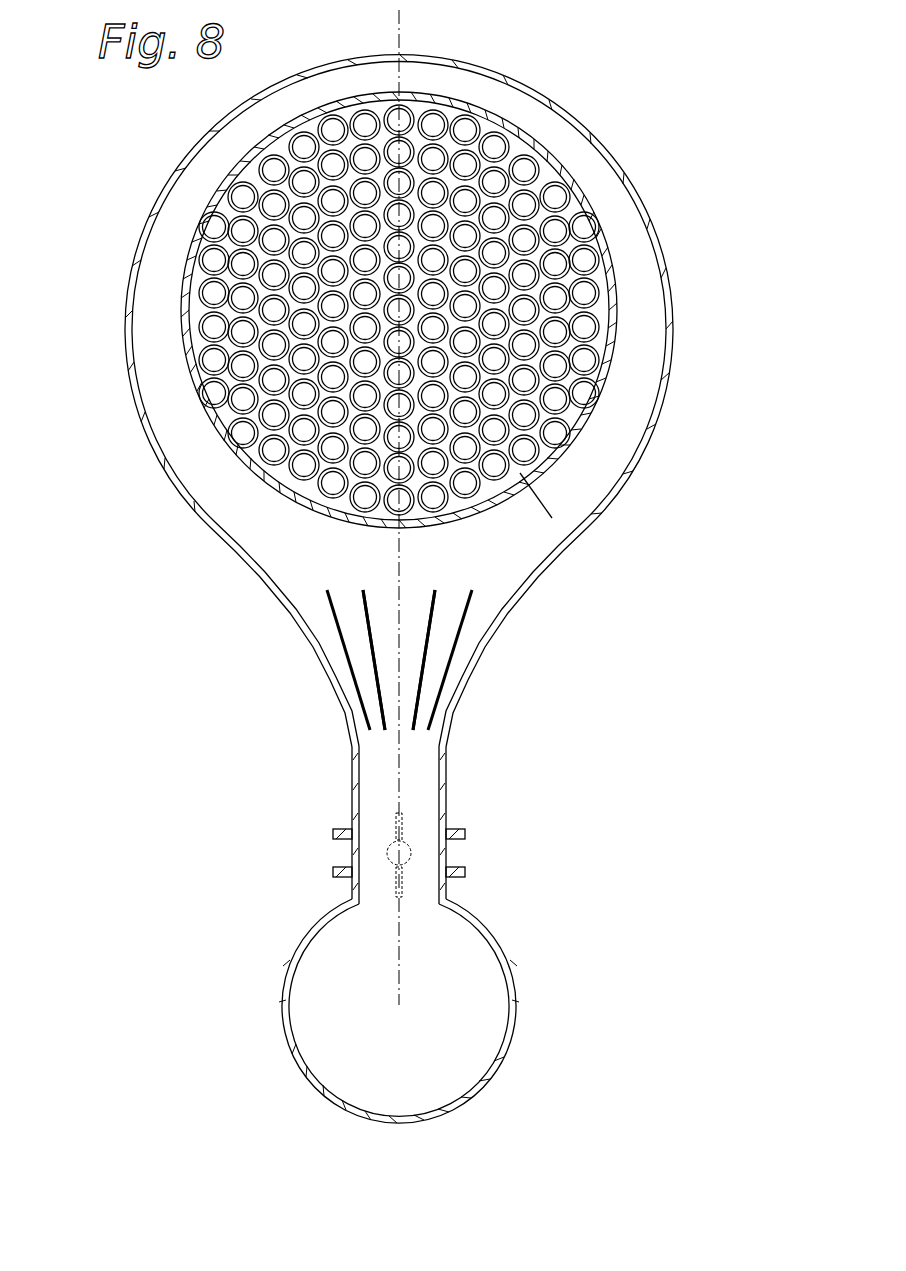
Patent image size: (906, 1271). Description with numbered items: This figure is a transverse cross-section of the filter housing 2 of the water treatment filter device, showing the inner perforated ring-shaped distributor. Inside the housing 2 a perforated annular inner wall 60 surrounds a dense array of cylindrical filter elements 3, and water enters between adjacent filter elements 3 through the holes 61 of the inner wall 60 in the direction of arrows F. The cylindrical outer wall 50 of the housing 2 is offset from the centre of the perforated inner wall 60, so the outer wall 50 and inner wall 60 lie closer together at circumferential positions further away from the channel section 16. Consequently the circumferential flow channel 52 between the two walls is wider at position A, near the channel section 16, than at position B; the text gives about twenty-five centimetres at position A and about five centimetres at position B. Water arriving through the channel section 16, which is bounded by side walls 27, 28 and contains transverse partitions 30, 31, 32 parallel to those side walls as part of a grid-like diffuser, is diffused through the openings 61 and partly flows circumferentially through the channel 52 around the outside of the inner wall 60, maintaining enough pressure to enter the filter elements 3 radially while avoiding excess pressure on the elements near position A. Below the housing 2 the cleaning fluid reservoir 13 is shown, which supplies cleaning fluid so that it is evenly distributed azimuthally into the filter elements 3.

The filter housing 2 is at (673, 250).
The filter elements 3 is at (250, 423).
The cleaning fluid reservoir 13 is at (498, 947).
The channel section 16 is at (497, 658).
The side wall 27 is at (357, 683).
The side wall 28 is at (443, 685).
The transverse partition 30 is at (365, 620).
The transverse partition 31 is at (402, 693).
The transverse partition 32 is at (432, 622).
The cylindrical outer wall 50 is at (643, 457).
The circumferential flow channel 52 is at (635, 312).
The perforated annular inner wall 60 is at (547, 110).
The holes 61 is at (617, 270).
The position A is at (307, 533).
The position B is at (478, 97).
The arrows F is at (317, 147).